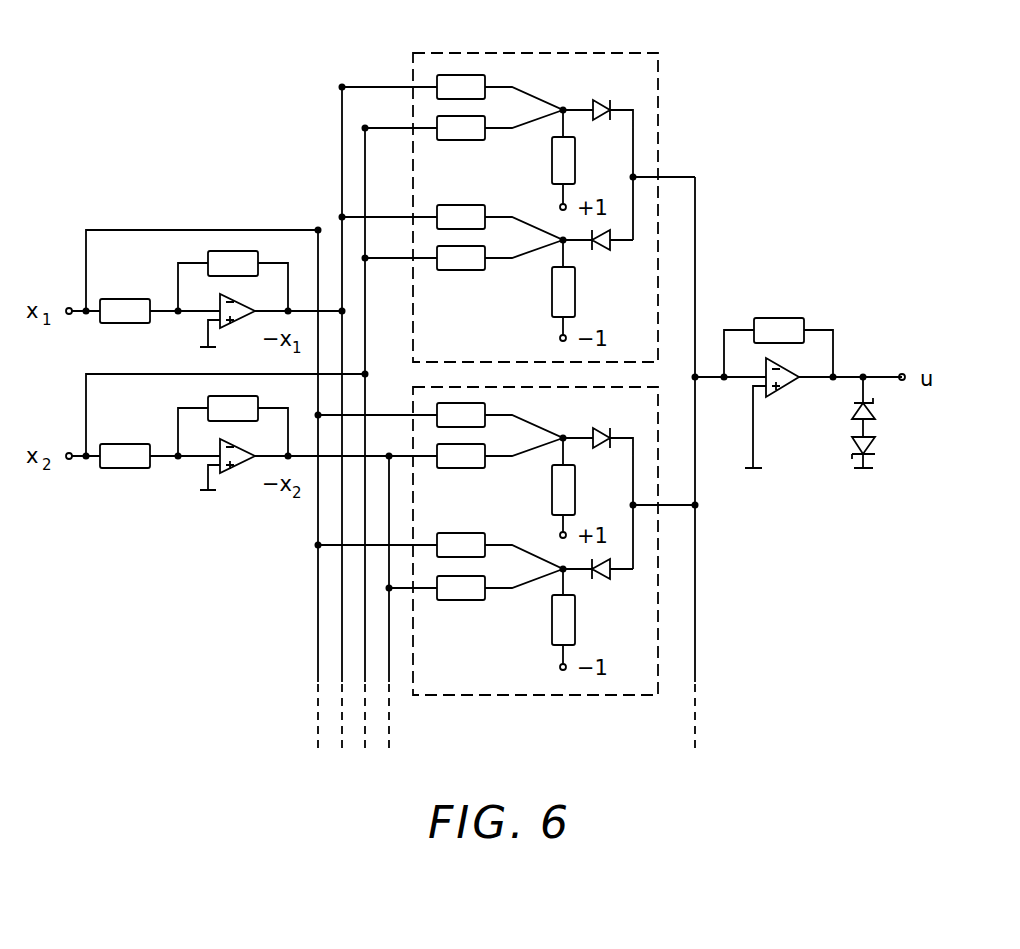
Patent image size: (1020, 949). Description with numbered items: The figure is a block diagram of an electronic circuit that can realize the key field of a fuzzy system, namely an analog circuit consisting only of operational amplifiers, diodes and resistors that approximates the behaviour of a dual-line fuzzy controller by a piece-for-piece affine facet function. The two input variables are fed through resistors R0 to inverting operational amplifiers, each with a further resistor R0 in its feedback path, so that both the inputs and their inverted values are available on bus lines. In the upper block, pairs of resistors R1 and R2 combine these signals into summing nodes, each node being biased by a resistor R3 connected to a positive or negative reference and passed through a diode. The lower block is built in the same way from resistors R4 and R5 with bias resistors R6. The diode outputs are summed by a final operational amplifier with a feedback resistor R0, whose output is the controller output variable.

The input/feedback resistor R0 is at (452, 359).
The weighting resistor R1 is at (461, 152).
The weighting resistor R2 is at (461, 193).
The bias resistor R3 is at (563, 227).
The weighting resistor R4 is at (461, 480).
The weighting resistor R5 is at (461, 522).
The bias resistor R6 is at (563, 555).